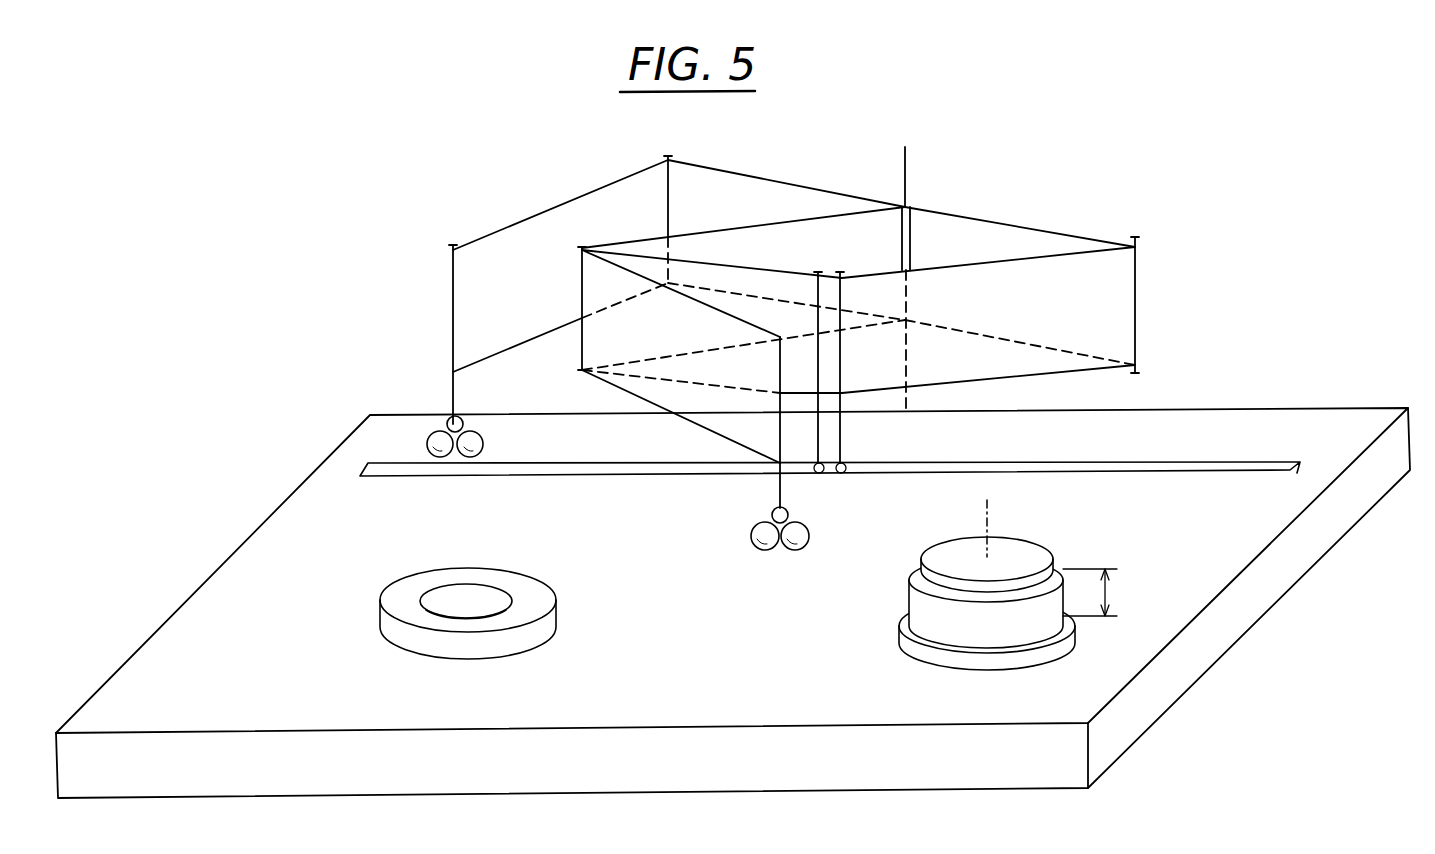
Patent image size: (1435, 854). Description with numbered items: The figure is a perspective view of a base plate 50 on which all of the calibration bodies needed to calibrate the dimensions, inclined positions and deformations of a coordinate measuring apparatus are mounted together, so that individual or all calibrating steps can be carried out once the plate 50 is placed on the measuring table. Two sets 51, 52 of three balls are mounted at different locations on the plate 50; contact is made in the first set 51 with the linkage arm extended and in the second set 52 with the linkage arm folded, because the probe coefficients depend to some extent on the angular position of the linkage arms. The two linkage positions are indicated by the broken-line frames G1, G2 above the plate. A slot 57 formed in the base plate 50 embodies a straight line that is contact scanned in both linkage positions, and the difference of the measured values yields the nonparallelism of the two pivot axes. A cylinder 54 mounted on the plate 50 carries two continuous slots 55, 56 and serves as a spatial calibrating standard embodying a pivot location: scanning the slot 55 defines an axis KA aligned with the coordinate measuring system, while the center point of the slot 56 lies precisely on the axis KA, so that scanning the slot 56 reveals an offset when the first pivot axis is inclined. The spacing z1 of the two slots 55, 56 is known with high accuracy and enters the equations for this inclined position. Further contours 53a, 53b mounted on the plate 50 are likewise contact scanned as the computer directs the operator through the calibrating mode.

The base plate 50 is at (1172, 685).
The first set of three balls 51 is at (442, 441).
The second set of three balls 52 is at (760, 543).
The contour 53a is at (493, 650).
The contour 53b is at (447, 595).
The cylinder 54 is at (912, 602).
The slot 55 is at (907, 637).
The slot 56 is at (920, 568).
The slot 57 is at (1117, 467).
The first frame G1 is at (760, 225).
The second frame G2 is at (1005, 217).
The axis KA is at (992, 512).
The spacing of the two slots z1 is at (1105, 592).